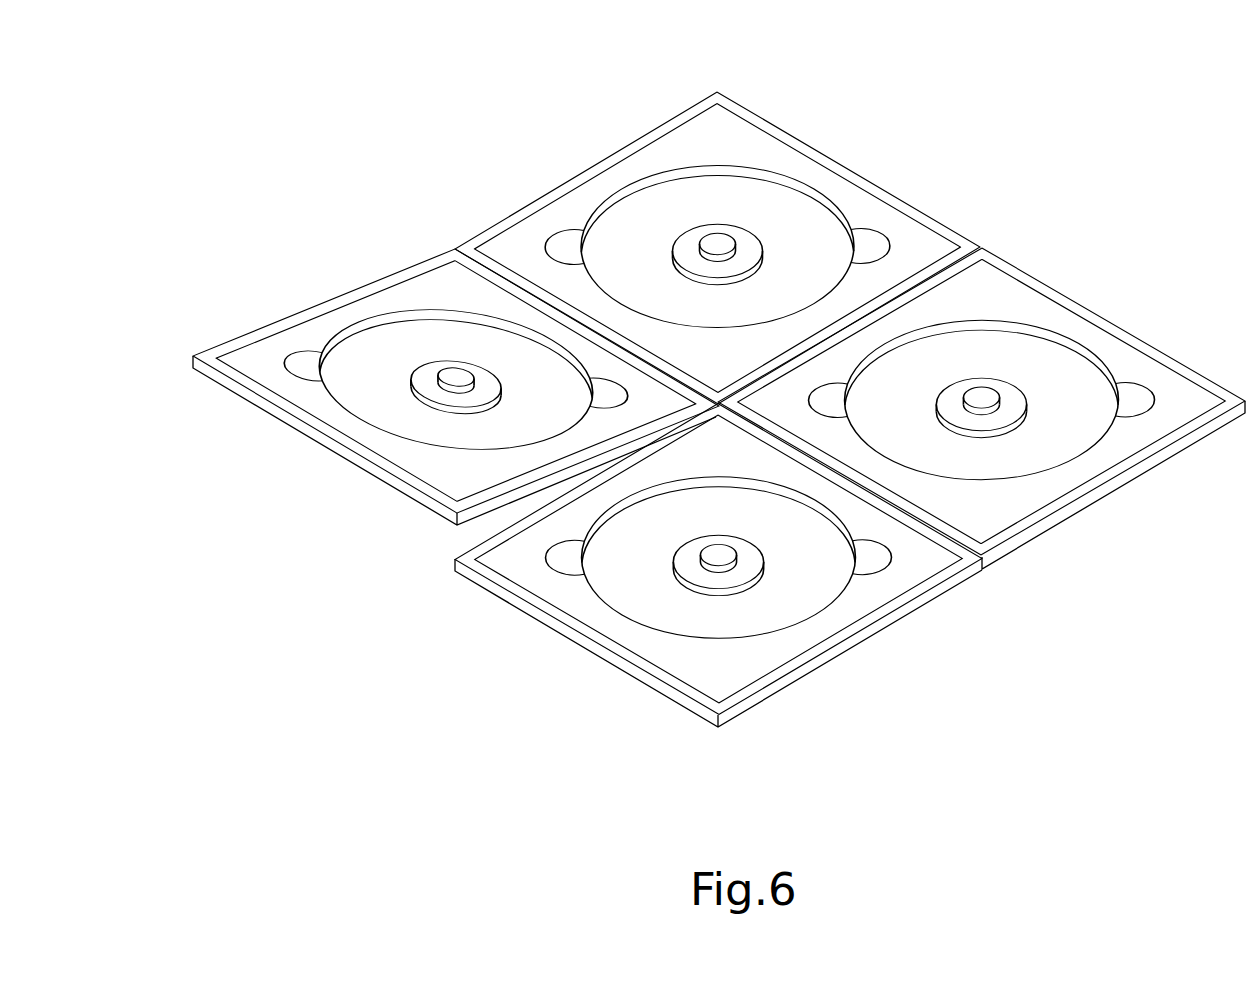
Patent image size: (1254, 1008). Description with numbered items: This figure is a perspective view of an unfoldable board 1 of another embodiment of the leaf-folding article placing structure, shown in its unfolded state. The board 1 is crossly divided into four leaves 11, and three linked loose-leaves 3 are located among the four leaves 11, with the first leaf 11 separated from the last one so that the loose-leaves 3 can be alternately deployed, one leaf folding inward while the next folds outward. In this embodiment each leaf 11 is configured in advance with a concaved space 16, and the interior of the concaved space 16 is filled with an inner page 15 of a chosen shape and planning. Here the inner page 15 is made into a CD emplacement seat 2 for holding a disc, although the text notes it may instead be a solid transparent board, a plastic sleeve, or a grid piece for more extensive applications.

The unfoldable board 1 is at (696, 401).
The CD emplacement seat 2 is at (632, 230).
The linked loose-leaf 3 is at (981, 351).
The leaf 11 is at (300, 310).
The inner page 15 is at (990, 295).
The concaved space 16 is at (666, 234).